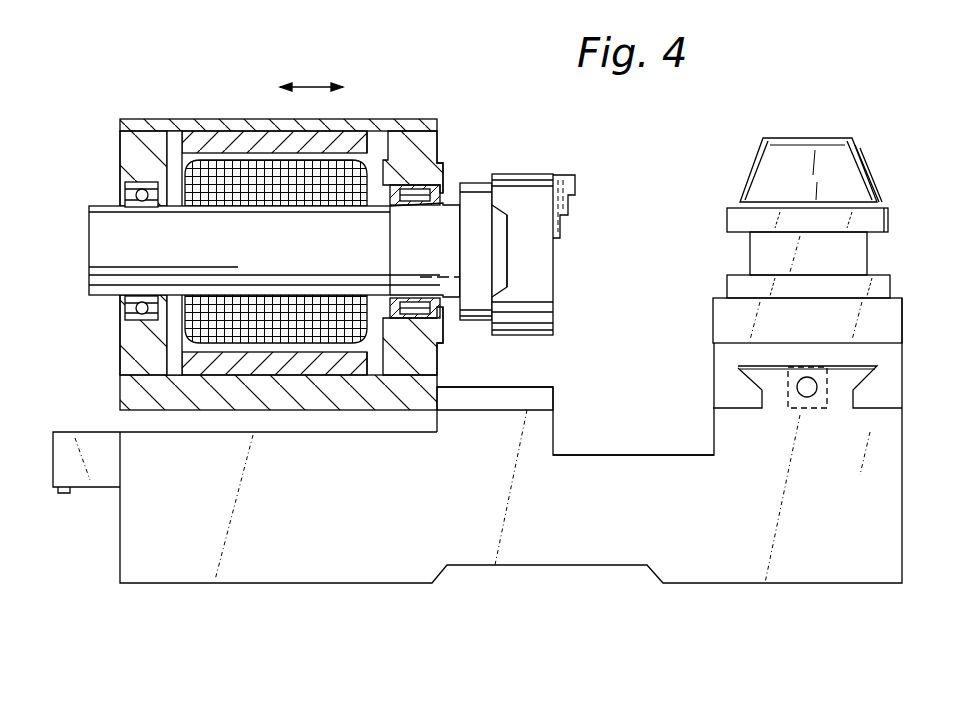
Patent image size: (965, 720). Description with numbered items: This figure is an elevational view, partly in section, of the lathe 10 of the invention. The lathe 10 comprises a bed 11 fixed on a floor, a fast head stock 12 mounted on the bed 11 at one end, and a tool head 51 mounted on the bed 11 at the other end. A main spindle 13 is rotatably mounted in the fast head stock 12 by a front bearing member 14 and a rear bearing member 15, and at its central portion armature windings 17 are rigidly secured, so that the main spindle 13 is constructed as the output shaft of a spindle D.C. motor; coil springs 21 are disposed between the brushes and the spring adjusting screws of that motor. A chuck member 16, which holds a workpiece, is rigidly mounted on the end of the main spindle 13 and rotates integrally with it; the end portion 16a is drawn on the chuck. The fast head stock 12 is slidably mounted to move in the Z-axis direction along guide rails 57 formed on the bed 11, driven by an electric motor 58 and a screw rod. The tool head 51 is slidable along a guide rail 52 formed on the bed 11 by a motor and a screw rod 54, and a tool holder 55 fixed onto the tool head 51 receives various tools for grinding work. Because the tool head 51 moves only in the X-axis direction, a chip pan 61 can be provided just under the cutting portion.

The lathe 10 is at (660, 175).
The bed 11 is at (754, 572).
The fast head stock 12 is at (112, 393).
The main spindle 13 is at (240, 220).
The front bearing member 14 is at (447, 187).
The rear bearing member 15 is at (138, 182).
The chuck member 16 is at (530, 176).
The stepped engagement portion of coupling 16a is at (580, 188).
The armature windings 17 is at (345, 165).
The coil springs 21 is at (218, 130).
The tool head 51 is at (902, 322).
The guide rail 52 is at (850, 375).
The screw rod 54 is at (805, 396).
The tool holder 55 is at (888, 220).
The guide rails 57 is at (505, 397).
The electric motor 58 is at (80, 478).
The chip pan 61 is at (633, 435).